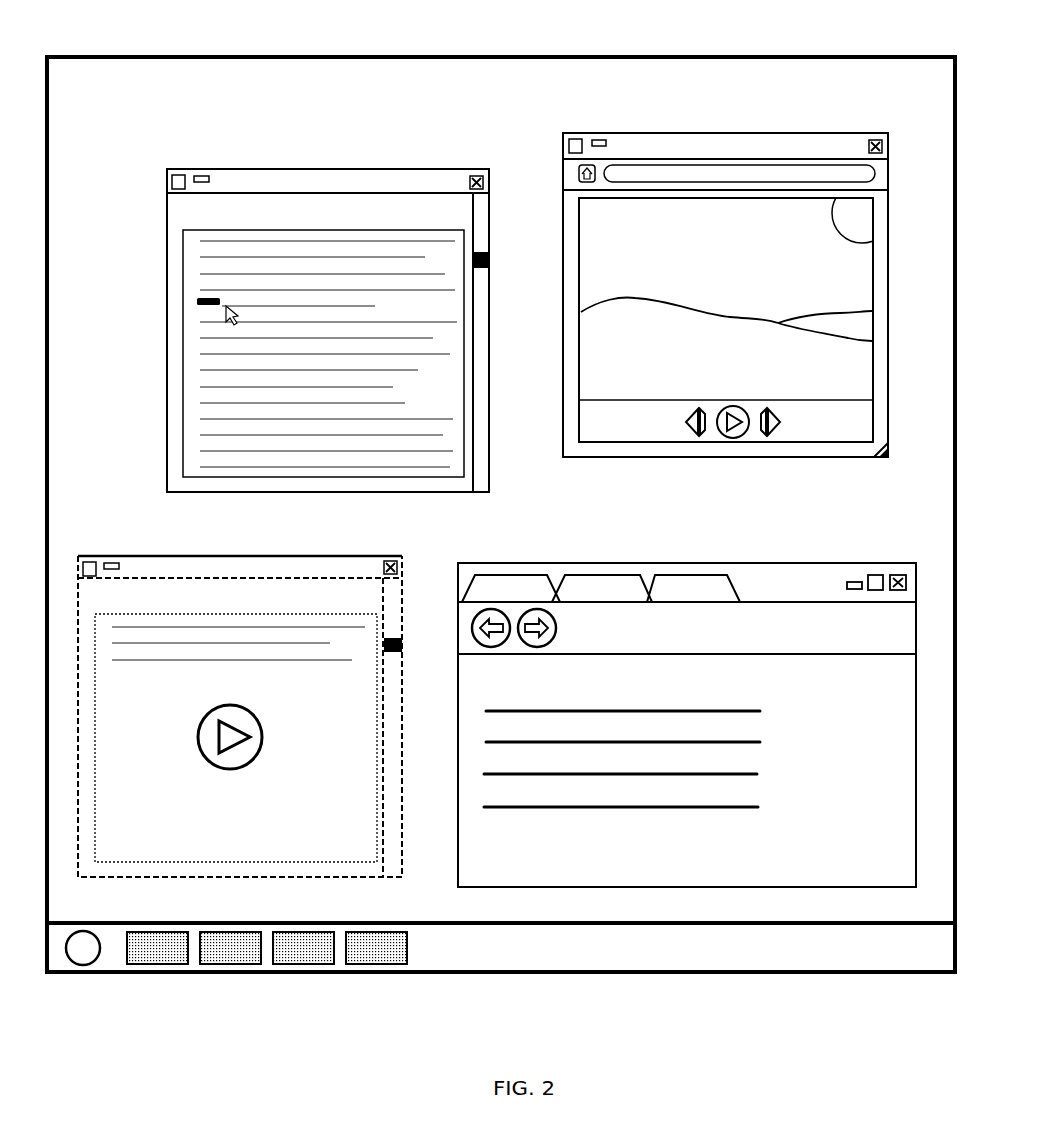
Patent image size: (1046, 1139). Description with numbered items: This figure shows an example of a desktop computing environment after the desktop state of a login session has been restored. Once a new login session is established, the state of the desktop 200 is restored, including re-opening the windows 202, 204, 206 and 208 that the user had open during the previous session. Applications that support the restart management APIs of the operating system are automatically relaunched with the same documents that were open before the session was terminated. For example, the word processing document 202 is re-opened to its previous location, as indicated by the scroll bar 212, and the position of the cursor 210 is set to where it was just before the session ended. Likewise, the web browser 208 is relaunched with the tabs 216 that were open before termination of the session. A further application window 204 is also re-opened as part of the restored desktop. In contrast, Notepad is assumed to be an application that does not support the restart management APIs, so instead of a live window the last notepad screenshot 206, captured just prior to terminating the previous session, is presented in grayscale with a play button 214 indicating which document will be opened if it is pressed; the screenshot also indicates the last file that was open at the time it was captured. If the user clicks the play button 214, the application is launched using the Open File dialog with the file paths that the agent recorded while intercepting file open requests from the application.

The desktop 200 is at (430, 54).
The word processing document 202 is at (297, 142).
The window 204 is at (697, 108).
The notepad screenshot 206 is at (210, 530).
The web browser 208 is at (709, 537).
The cursor 210 is at (197, 301).
The scroll bar 212 is at (490, 260).
The play button 214 is at (260, 717).
The tabs 216 is at (576, 575).